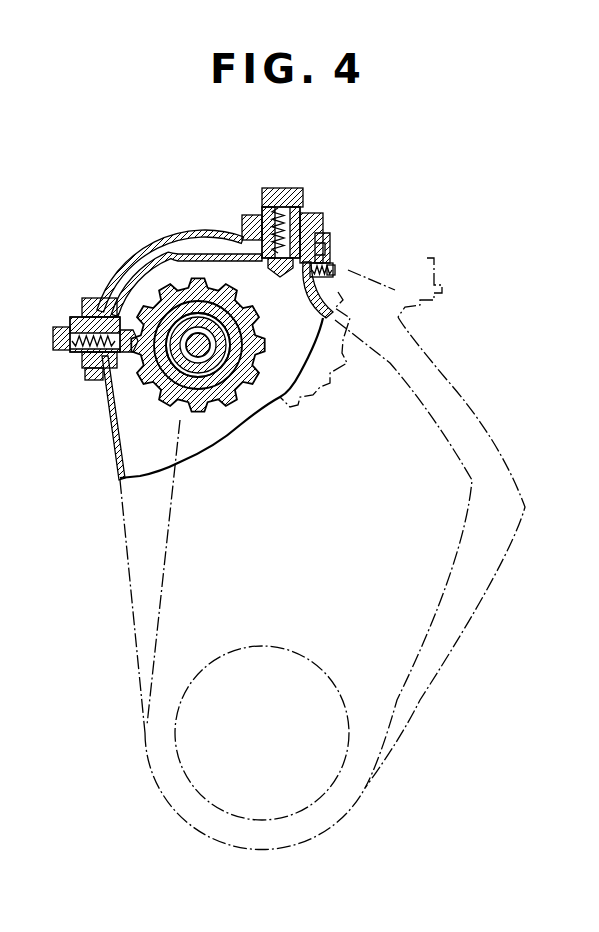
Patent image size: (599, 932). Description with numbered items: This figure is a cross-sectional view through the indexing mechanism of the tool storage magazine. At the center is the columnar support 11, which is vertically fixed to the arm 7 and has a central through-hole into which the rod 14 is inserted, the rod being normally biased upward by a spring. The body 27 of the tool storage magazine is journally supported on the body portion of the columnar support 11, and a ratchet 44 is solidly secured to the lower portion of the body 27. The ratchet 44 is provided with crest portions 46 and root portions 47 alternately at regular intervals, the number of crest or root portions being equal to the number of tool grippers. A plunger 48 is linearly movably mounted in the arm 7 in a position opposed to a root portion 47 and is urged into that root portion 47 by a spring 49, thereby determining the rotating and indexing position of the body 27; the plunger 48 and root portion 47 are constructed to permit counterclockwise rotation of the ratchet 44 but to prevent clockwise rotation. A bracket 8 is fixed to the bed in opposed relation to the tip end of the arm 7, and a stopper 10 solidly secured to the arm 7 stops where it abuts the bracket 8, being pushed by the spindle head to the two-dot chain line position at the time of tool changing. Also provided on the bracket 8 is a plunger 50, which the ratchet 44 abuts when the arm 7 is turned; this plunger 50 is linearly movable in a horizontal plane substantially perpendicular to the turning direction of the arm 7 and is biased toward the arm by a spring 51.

The arm 7 is at (333, 302).
The bracket 8 is at (322, 228).
The stopper 10 is at (330, 240).
The columnar support 11 is at (220, 388).
The rod 14 is at (210, 349).
The body of tool storage magazine 27 is at (207, 388).
The ratchet 44 is at (168, 298).
The crest portions 46 is at (173, 395).
The root portions 47 is at (182, 423).
The plunger 48 is at (103, 383).
The spring 49 is at (82, 313).
The plunger 50 is at (290, 270).
The spring 51 is at (270, 220).